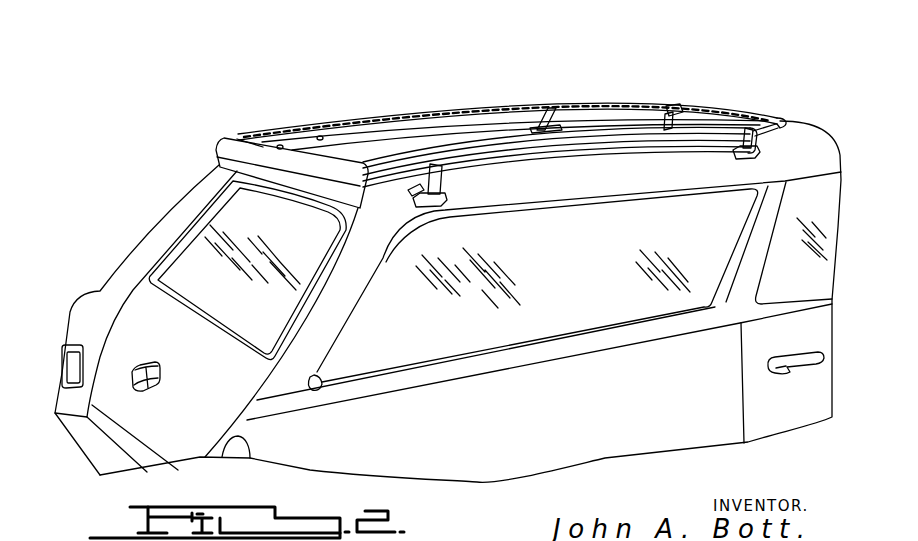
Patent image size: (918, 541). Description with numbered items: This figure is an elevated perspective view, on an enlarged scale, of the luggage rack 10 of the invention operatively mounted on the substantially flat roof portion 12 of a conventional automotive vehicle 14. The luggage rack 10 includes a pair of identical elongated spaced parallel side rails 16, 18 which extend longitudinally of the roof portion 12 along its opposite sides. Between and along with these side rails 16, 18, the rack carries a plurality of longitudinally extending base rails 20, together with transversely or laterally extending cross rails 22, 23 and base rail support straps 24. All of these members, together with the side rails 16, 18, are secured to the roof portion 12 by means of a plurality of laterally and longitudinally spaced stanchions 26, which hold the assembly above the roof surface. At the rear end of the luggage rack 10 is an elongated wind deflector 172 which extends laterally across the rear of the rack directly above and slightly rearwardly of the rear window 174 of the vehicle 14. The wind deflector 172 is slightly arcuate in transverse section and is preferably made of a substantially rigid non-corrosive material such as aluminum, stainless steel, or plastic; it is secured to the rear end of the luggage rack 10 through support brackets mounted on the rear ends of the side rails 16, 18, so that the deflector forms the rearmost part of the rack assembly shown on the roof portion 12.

The luggage rack 10 is at (511, 125).
The roof portion 12 is at (800, 123).
The automotive vehicle 14 is at (108, 269).
The side rail 16 is at (620, 133).
The side rail 18 is at (440, 117).
The base rails 20 is at (645, 158).
The cross rail 22 is at (348, 147).
The cross rail 23 is at (702, 108).
The base rail support straps 24 is at (411, 190).
The stanchions 26 is at (448, 197).
The wind deflector 172 is at (217, 152).
The rear window 174 is at (211, 243).